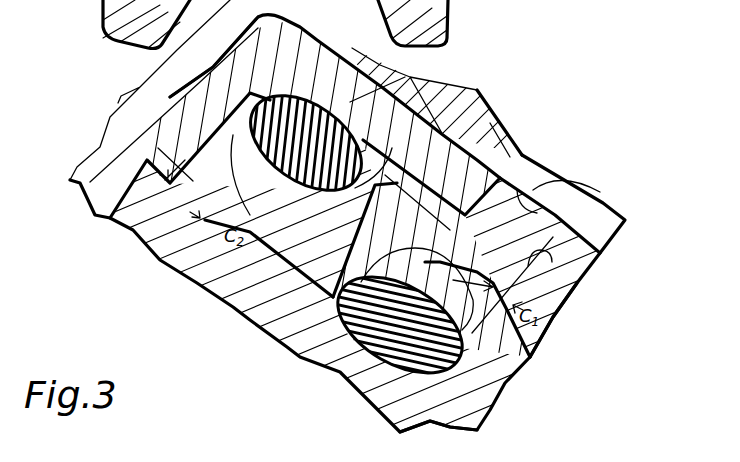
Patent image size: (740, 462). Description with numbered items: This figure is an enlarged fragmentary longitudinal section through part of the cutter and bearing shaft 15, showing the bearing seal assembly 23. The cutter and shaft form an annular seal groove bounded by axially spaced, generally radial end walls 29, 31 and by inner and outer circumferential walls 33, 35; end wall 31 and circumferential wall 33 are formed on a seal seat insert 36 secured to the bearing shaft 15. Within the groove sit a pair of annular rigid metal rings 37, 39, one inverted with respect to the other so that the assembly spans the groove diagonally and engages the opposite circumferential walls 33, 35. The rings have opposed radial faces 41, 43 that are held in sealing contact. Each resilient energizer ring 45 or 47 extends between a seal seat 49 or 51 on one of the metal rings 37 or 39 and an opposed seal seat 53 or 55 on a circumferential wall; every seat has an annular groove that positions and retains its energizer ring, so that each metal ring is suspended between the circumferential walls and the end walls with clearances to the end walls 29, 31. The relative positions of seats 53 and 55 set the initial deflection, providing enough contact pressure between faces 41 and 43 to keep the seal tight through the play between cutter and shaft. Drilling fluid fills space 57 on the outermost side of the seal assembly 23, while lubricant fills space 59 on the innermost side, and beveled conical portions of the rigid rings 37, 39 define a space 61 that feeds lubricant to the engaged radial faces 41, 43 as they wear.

The bearing shaft 15 is at (627, 220).
The seal assembly 23 is at (252, 250).
The end wall 29 is at (590, 270).
The end wall 31 is at (200, 108).
The inner circumferential wall 33 is at (523, 157).
The outer circumferential wall 35 is at (283, 318).
The seal seat insert 36 is at (490, 115).
The rigid ring 37 is at (530, 357).
The rigid ring 39 is at (235, 222).
The radial face 41 is at (265, 295).
The radial face 43 is at (345, 305).
The energizer ring 45 is at (490, 383).
The energizer ring 47 is at (262, 77).
The seal seat 49 is at (553, 310).
The seal seat 51 is at (137, 230).
The seal seat 53 is at (362, 367).
The seal seat 55 is at (408, 77).
The space 57 is at (165, 158).
The space 59 is at (570, 177).
The space 61 is at (407, 200).